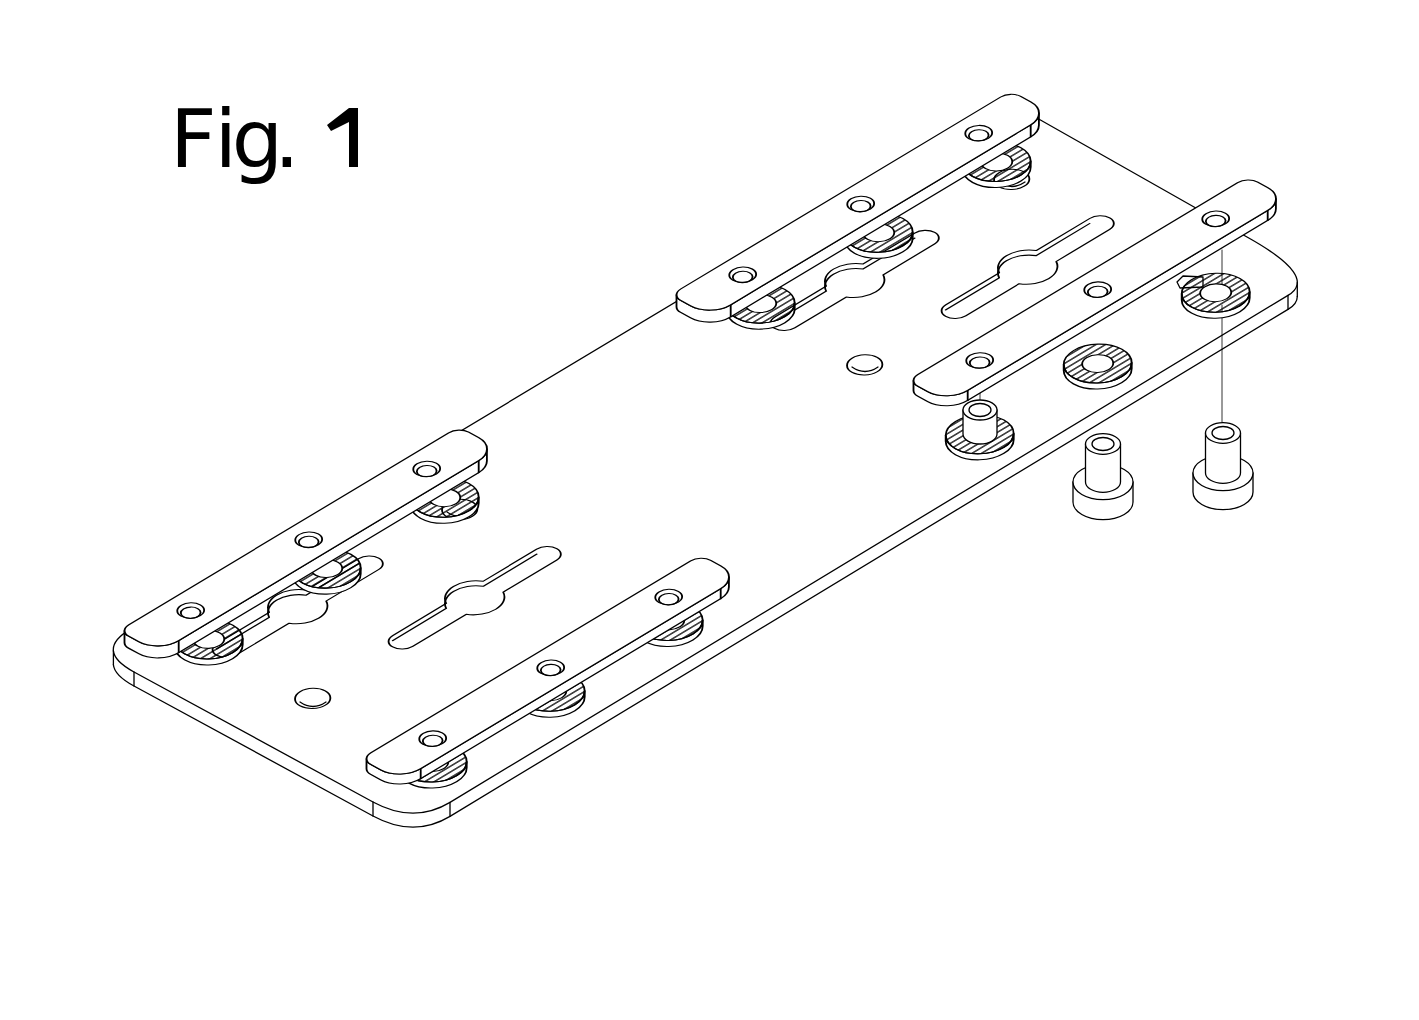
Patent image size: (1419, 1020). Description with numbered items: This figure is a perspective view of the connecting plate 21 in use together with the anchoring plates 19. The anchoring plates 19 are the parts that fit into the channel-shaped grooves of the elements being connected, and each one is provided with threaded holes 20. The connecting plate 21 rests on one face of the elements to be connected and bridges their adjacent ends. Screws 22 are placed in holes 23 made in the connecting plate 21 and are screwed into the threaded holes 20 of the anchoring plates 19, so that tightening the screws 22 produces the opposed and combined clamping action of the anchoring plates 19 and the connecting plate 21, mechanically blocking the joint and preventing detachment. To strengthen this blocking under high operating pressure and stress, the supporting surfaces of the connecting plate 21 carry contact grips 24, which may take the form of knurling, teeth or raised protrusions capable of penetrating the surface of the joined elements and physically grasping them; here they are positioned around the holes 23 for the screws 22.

The anchoring plates 19 is at (763, 262).
The threaded holes 20 is at (1212, 216).
The connecting plate 21 is at (793, 518).
The screws 22 is at (985, 432).
The holes 23 is at (1245, 284).
The contact grips 24 is at (1277, 310).